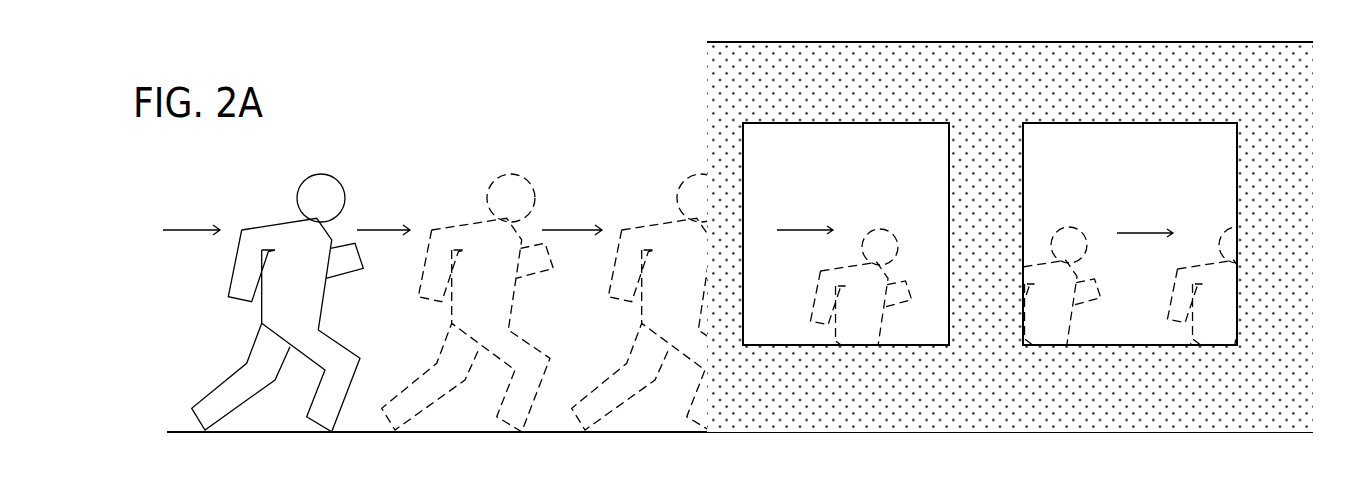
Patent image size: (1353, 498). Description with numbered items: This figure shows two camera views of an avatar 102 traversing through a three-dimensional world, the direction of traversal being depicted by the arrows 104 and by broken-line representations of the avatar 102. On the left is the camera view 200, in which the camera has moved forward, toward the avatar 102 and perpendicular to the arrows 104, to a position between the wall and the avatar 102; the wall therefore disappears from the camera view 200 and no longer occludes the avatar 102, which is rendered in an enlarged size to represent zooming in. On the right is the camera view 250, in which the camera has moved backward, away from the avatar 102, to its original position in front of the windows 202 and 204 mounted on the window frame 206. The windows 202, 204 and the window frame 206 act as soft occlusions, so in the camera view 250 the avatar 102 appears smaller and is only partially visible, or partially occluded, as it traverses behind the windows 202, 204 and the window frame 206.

The avatar 102 is at (305, 243).
The arrows 104 is at (397, 226).
The camera view 200 is at (464, 148).
The window 202 is at (875, 148).
The window 204 is at (1185, 148).
The window frame 206 is at (988, 409).
The camera view 250 is at (967, 30).